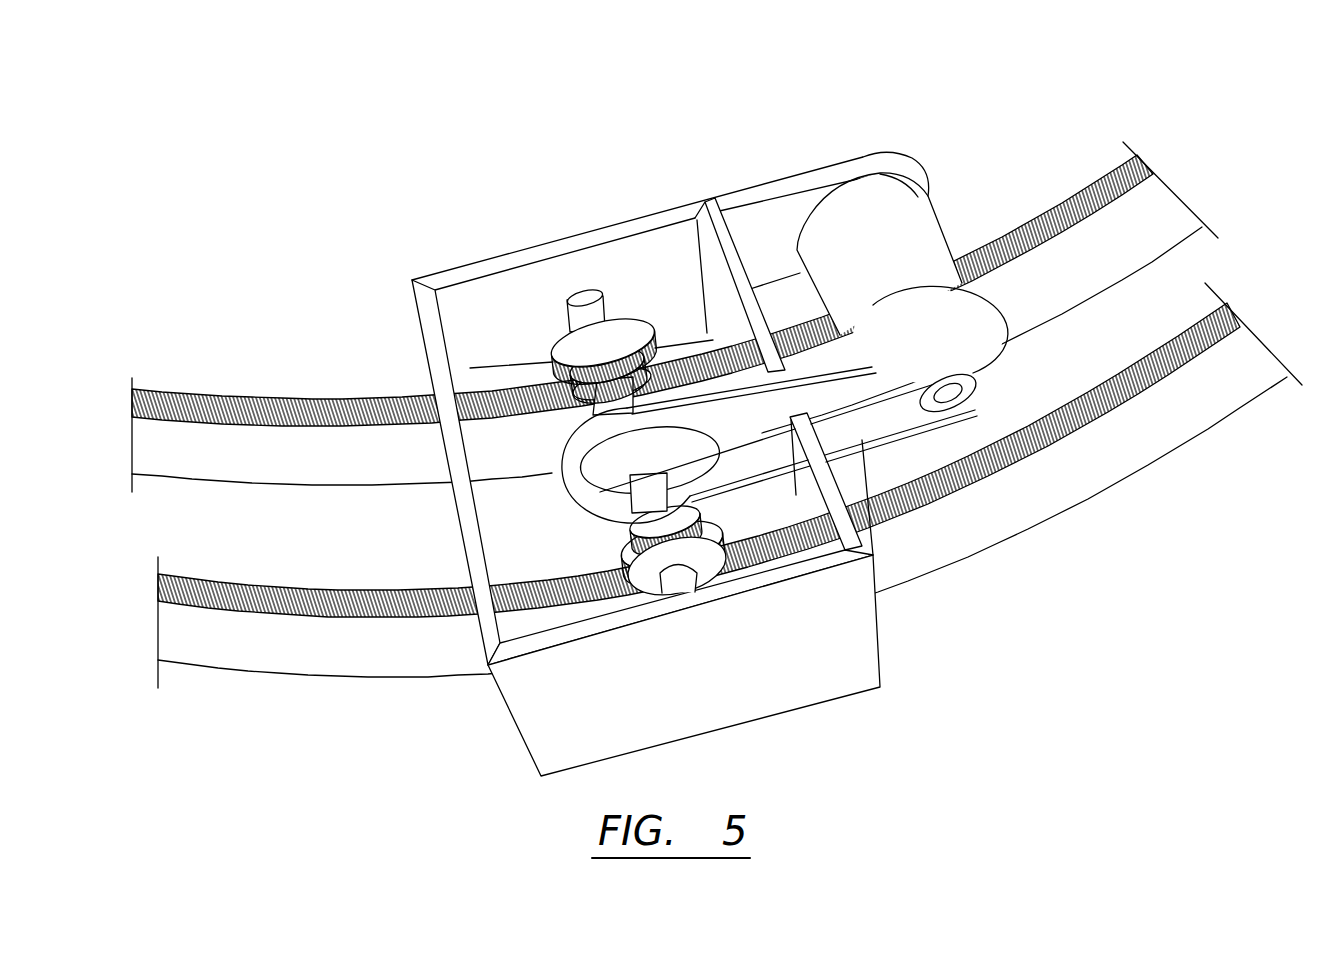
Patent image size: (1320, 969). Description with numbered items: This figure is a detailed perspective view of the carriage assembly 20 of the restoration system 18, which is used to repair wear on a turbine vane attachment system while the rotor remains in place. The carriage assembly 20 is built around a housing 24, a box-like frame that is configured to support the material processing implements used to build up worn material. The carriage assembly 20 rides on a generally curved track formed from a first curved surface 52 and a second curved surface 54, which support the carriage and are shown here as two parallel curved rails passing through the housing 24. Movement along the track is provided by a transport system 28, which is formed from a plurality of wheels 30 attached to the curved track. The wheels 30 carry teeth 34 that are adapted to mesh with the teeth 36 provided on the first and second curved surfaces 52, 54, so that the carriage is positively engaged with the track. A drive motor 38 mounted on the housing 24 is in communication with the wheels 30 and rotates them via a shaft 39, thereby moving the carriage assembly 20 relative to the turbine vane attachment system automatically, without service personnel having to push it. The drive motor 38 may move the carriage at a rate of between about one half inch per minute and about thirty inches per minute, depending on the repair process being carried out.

The restoration system 18 is at (717, 404).
The carriage assembly 20 is at (713, 413).
The housing 24 is at (550, 246).
The transport system 28 is at (590, 543).
The wheels 30 is at (555, 345).
The teeth 34 is at (643, 325).
The teeth 36 is at (1040, 214).
The drive motor 38 is at (935, 228).
The shaft 39 is at (688, 585).
The first curved surface 52 is at (262, 393).
The second curved surface 54 is at (278, 588).